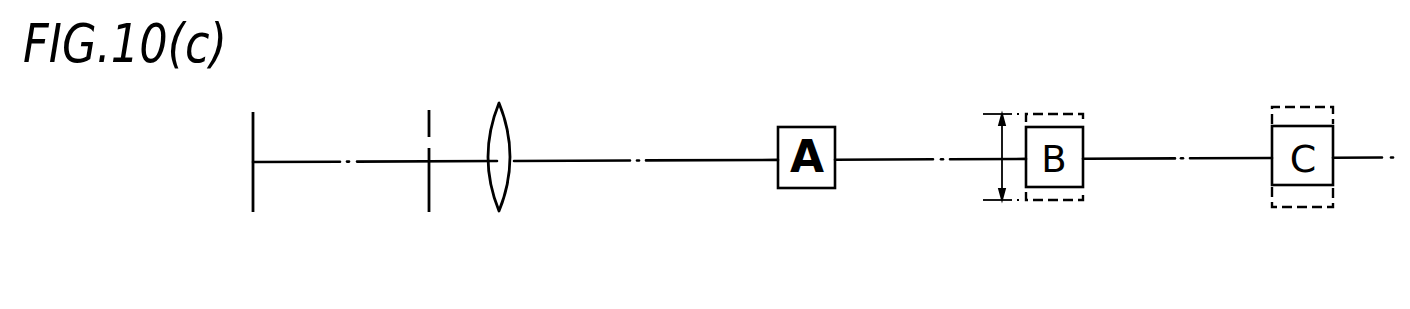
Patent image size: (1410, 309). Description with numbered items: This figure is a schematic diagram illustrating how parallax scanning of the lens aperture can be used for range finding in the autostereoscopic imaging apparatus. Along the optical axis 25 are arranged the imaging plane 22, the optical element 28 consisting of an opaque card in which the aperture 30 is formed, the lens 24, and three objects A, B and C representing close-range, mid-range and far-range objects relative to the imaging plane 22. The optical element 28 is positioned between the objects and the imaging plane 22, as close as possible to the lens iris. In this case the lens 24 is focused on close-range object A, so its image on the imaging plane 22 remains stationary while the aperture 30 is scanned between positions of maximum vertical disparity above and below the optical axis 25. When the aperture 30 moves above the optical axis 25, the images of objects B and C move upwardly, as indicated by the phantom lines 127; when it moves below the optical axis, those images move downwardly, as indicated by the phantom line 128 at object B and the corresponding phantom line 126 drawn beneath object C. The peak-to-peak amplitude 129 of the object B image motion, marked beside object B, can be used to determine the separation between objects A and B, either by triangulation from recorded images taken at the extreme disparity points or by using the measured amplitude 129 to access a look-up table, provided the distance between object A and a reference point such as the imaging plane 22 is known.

The imaging plane 22 is at (254, 131).
The lens 24 is at (500, 128).
The optical axis 25 is at (667, 160).
The optical element 28 is at (428, 186).
The aperture 30 is at (428, 147).
The detector region 126 is at (1306, 209).
The phantom lines 127 is at (1055, 115).
The phantom line 128 is at (1053, 203).
The peak-to-peak amplitude 129 is at (999, 173).